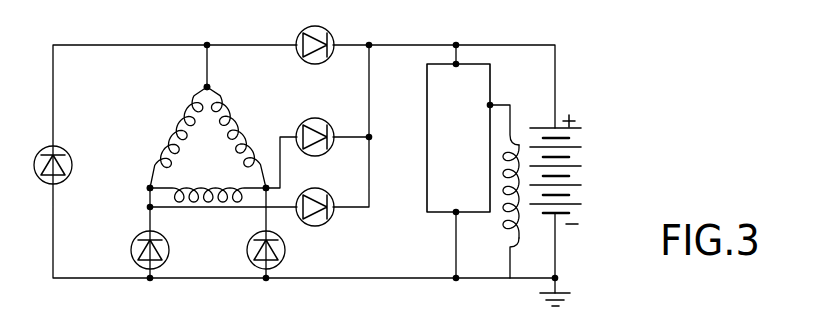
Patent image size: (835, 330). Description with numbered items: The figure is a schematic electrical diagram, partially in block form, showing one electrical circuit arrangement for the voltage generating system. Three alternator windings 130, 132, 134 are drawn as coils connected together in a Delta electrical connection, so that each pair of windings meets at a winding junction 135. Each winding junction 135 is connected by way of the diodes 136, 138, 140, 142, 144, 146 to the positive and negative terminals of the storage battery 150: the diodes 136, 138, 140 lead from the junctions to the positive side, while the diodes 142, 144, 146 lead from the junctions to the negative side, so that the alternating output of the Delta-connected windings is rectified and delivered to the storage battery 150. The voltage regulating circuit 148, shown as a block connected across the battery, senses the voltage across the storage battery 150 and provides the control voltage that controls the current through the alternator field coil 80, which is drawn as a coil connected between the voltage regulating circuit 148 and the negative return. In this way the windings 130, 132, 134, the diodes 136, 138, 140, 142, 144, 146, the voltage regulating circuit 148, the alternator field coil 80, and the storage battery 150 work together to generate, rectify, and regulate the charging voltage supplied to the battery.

The winding 130 is at (165, 140).
The winding 132 is at (244, 128).
The winding 134 is at (210, 182).
The winding junction 135 is at (207, 86).
The diode 136 is at (302, 60).
The diode 138 is at (305, 118).
The diode 140 is at (330, 220).
The diode 142 is at (247, 243).
The diode 144 is at (131, 243).
The diode 146 is at (70, 160).
The voltage regulating circuit 148 is at (475, 131).
The alternator field coil 80 is at (518, 140).
The storage battery 150 is at (591, 143).